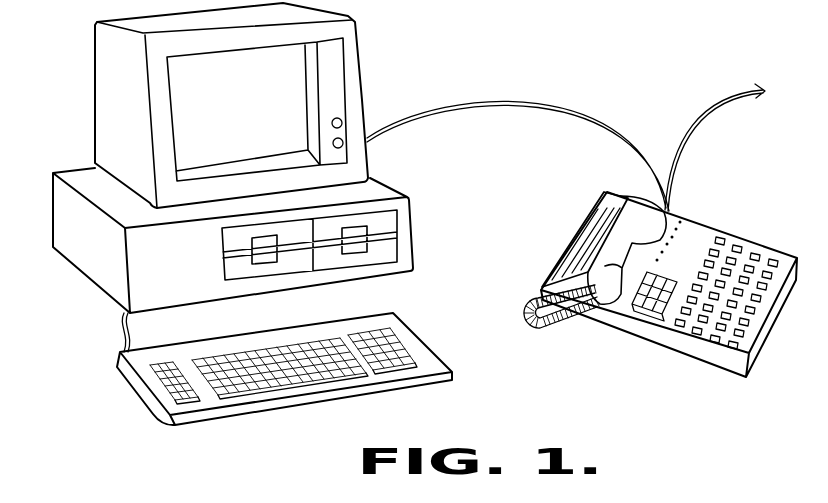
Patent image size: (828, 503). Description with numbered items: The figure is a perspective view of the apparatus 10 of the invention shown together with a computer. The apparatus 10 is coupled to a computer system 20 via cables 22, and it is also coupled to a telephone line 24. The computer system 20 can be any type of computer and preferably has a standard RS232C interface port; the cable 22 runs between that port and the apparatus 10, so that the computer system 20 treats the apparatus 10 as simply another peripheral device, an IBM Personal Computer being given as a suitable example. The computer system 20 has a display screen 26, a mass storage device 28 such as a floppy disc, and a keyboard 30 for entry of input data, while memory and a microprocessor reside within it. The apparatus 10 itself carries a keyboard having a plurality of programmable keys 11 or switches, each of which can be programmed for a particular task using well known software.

The apparatus 10 is at (662, 303).
The programmable keys 11 is at (775, 257).
The computer system 20 is at (261, 235).
The cables 22 is at (547, 108).
The telephone line 24 is at (733, 95).
The display screen 26 is at (300, 102).
The mass storage device 28 is at (390, 237).
The keyboard 30 is at (207, 410).